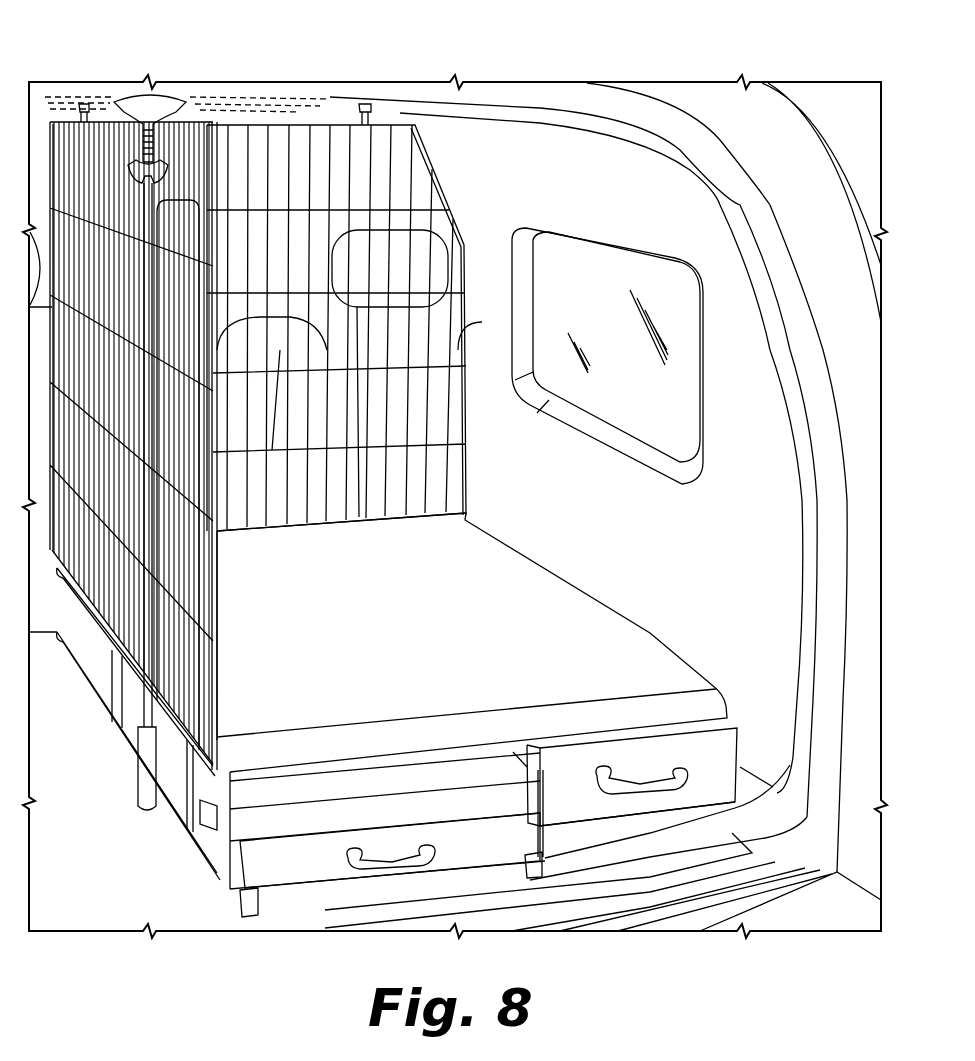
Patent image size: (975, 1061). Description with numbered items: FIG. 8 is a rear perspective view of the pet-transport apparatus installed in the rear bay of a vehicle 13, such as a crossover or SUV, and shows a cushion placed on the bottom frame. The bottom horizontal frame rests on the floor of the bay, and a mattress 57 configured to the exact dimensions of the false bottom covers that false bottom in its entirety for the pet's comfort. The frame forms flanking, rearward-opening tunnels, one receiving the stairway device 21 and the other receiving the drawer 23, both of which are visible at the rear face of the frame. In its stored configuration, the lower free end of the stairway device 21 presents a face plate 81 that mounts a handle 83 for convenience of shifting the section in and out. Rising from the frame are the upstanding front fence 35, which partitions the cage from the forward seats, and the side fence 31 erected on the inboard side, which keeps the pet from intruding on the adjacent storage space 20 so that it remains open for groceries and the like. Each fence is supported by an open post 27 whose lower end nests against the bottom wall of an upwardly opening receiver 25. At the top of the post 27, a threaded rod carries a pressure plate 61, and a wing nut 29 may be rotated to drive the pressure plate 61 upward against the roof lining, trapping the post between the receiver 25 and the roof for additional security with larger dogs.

The vehicle 13 is at (99, 878).
The storage space 20 is at (732, 584).
The stairway device 21 is at (222, 886).
The drawer 23 is at (745, 743).
The receiver 25 is at (140, 752).
The post 27 is at (140, 688).
The wing nut 29 is at (178, 182).
The side fence 31 is at (218, 613).
The front fence 35 is at (443, 189).
The mattress 57 is at (588, 630).
The pressure plate 61 is at (145, 94).
The face plate 81 is at (499, 852).
The handle 83 is at (387, 852).